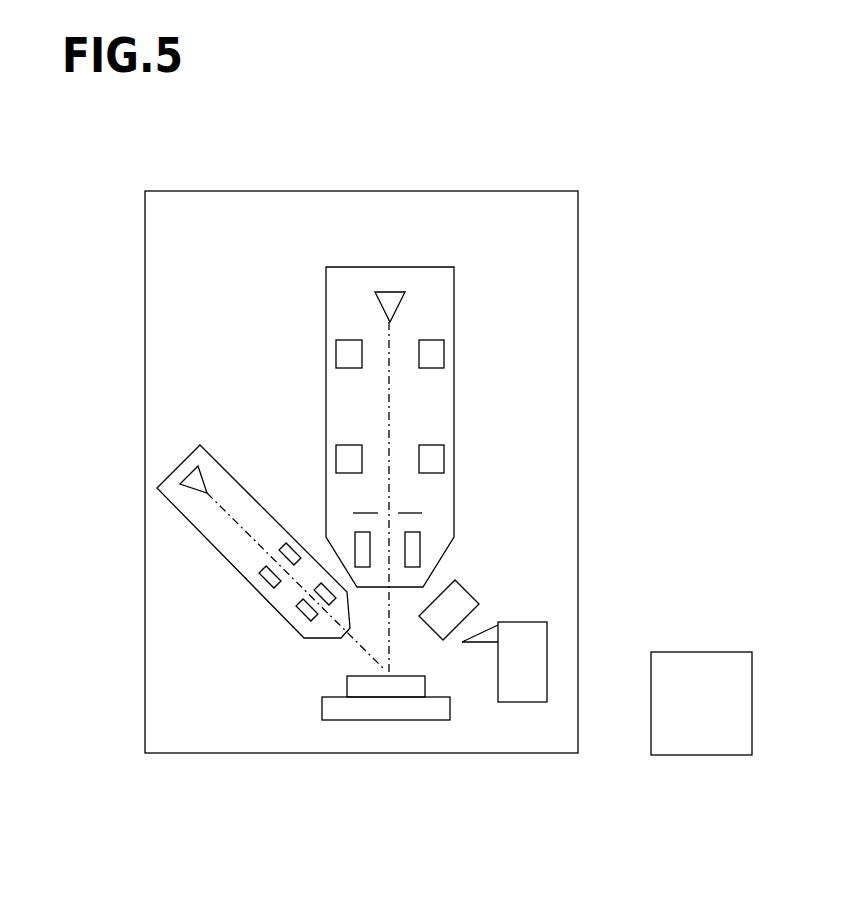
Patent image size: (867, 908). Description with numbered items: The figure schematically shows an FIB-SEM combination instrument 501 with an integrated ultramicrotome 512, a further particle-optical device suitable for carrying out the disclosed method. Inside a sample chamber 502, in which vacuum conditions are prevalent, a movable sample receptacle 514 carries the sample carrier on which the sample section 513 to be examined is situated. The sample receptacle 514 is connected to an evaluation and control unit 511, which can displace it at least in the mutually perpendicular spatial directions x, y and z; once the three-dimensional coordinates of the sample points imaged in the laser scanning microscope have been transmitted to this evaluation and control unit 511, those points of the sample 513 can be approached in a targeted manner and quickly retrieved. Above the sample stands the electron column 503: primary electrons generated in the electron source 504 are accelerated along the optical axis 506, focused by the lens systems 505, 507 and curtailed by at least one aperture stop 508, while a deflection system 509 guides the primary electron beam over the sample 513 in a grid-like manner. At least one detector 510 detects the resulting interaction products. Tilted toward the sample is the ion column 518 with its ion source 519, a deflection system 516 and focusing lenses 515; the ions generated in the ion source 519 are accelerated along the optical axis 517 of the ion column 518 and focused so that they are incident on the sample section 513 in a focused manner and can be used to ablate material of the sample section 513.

The FIB-SEM combination instrument 501 is at (524, 158).
The sample chamber 502 is at (548, 222).
The electron column 503 is at (445, 280).
The electron source 504 is at (400, 310).
The lens system 505 is at (433, 357).
The optical axis 506 is at (390, 412).
The lens system 507 is at (433, 460).
The aperture stop 508 is at (400, 512).
The deflection system 509 is at (415, 545).
The detector 510 is at (470, 592).
The evaluation and control unit 511 is at (708, 732).
The ultramicrotome 512 is at (517, 688).
The sample section 513 is at (380, 688).
The sample receptacle 514 is at (333, 708).
The focusing lenses 515 is at (306, 617).
The deflection system 516 is at (257, 577).
The optical axis 517 is at (240, 530).
The ion column 518 is at (192, 505).
The ion source 519 is at (175, 462).